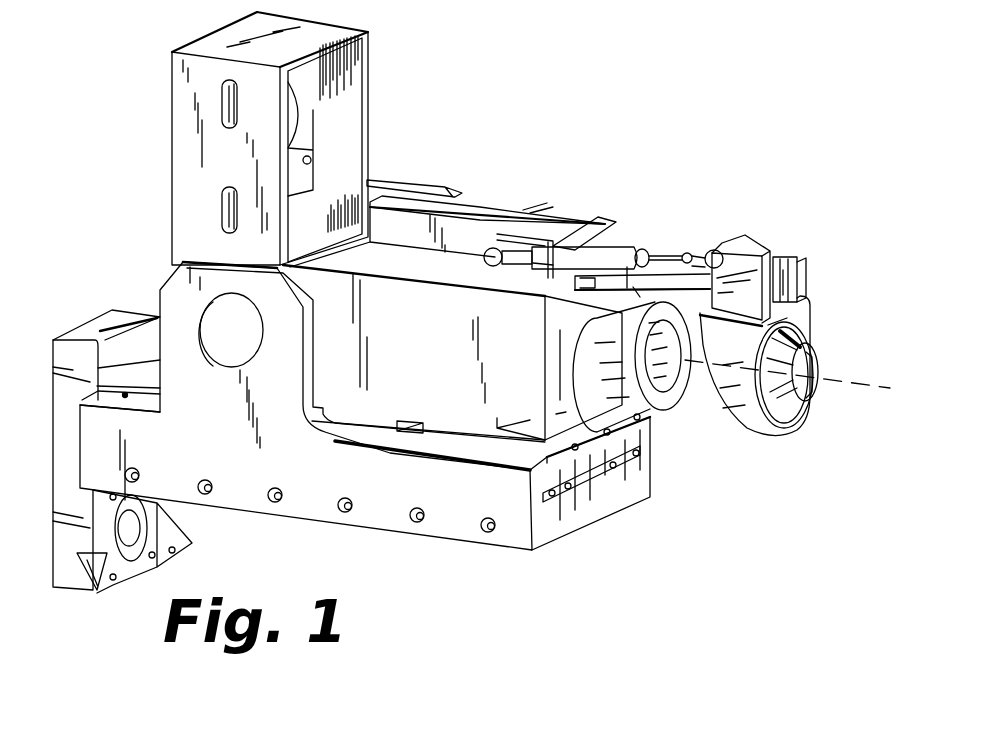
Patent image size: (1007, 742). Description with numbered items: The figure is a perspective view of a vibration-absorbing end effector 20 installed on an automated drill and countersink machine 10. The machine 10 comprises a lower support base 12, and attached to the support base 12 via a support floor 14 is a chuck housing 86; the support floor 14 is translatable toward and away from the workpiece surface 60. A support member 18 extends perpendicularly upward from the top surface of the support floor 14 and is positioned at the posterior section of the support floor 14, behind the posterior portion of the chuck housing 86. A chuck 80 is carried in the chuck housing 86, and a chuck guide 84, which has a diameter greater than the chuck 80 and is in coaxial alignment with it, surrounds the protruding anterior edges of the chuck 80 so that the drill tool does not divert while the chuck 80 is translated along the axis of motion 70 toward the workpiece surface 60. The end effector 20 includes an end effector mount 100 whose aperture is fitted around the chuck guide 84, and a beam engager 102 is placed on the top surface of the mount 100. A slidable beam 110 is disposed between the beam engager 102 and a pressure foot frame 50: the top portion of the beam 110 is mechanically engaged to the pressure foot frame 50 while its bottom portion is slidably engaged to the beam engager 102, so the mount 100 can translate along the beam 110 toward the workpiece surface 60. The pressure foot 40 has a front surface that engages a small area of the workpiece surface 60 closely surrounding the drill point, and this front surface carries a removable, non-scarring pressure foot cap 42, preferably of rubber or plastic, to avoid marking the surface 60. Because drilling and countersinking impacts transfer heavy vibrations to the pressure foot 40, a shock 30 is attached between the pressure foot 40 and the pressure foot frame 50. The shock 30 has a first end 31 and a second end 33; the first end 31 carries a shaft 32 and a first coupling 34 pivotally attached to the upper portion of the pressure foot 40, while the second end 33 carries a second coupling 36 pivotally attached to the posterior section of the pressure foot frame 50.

The automated drill and countersink machine 10 is at (488, 307).
The lower support base 12 is at (312, 498).
The support floor 14 is at (598, 490).
The support member 18 is at (178, 152).
The vibration-absorbing end effector 20 is at (804, 299).
The shock 30 is at (622, 250).
The first end 31 is at (741, 216).
The shaft 32 is at (663, 256).
The second end 33 is at (560, 200).
The first coupling 34 is at (797, 273).
The second coupling 36 is at (490, 250).
The pressure foot 40 is at (772, 244).
The pressure foot cap 42 is at (818, 354).
The pressure foot frame 50 is at (557, 218).
The workpiece surface 60 is at (800, 355).
The axis of motion 70 is at (804, 382).
The chuck 80 is at (652, 368).
The chuck guide 84 is at (613, 403).
The chuck housing 86 is at (410, 356).
The end effector mount 100 is at (563, 413).
The beam engager 102 is at (593, 285).
The slidable beam 110 is at (693, 278).